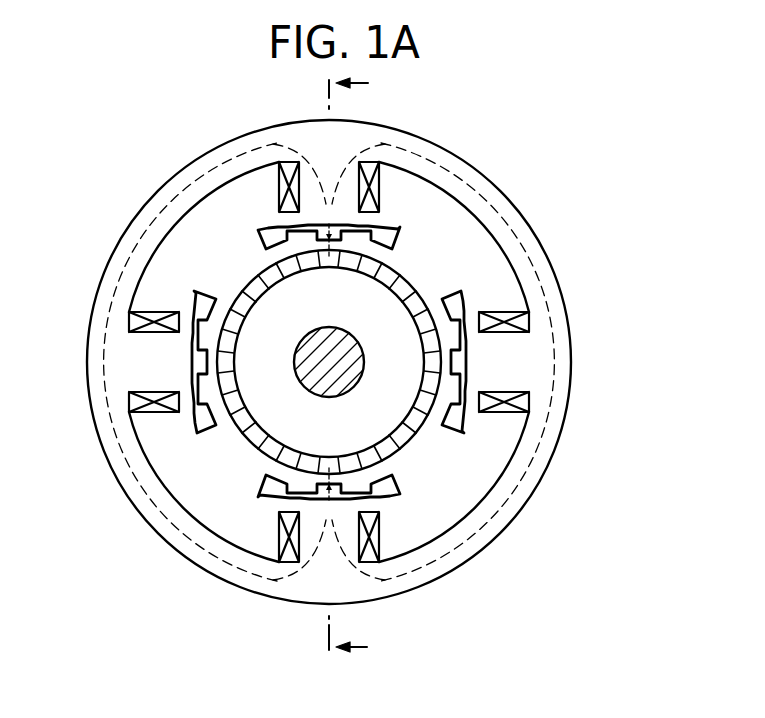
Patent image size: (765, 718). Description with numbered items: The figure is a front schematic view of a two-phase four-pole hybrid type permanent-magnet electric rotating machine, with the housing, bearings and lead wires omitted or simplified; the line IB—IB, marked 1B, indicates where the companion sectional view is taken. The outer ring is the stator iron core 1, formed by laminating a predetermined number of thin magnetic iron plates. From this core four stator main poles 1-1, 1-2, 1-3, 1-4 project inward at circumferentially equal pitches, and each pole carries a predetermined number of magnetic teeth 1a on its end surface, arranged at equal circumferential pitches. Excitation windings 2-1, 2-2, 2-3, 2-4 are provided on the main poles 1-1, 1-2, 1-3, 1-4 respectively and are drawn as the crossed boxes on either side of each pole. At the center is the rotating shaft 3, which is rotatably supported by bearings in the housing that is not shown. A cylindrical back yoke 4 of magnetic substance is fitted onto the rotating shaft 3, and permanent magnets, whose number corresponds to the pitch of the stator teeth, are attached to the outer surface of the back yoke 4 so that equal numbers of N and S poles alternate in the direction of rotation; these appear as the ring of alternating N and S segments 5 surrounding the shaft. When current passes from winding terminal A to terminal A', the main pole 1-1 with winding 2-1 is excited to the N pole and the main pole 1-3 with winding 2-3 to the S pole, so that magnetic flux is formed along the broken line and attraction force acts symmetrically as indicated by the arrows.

The stator iron core 1 is at (480, 179).
The magnetic teeth 1a is at (210, 285).
The stator main pole 1-1 is at (314, 156).
The stator main pole 1-2 is at (520, 357).
The stator main pole 1-3 is at (330, 557).
The stator main pole 1-4 is at (148, 363).
The excitation winding 2-1 is at (380, 192).
The excitation winding 2-2 is at (497, 418).
The excitation winding 2-3 is at (280, 540).
The excitation winding 2-4 is at (150, 312).
The rotating shaft 3 is at (349, 336).
The cylindrical back yoke 4 is at (362, 431).
The permanent magnet ring 5 is at (425, 292).
The section line IB—IB 1B is at (376, 367).